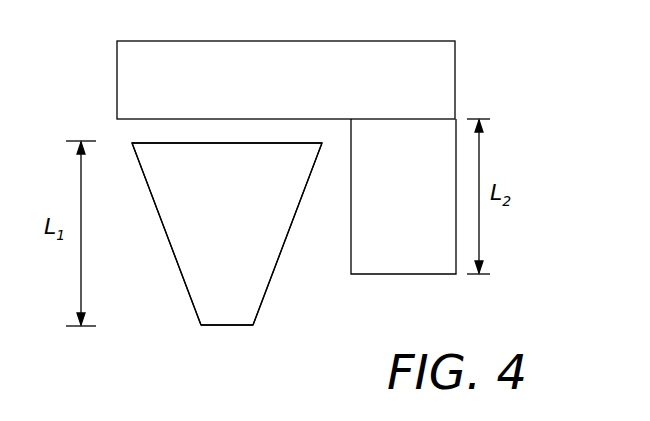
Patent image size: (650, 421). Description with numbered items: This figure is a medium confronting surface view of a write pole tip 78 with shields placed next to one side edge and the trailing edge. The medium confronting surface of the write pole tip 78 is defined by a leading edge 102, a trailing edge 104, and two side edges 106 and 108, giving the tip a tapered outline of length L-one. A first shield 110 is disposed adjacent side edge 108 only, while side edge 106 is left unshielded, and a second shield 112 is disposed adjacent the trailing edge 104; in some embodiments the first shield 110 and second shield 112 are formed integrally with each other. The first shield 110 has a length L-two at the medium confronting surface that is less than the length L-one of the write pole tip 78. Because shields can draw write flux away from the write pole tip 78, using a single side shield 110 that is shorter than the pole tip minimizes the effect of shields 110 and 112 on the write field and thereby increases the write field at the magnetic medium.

The second shield 112 is at (252, 88).
The first shield 110 is at (382, 200).
The write pole tip 78 is at (212, 244).
The trailing edge 104 is at (124, 133).
The side edge 106 is at (156, 256).
The side edge 108 is at (287, 272).
The leading edge 102 is at (226, 340).